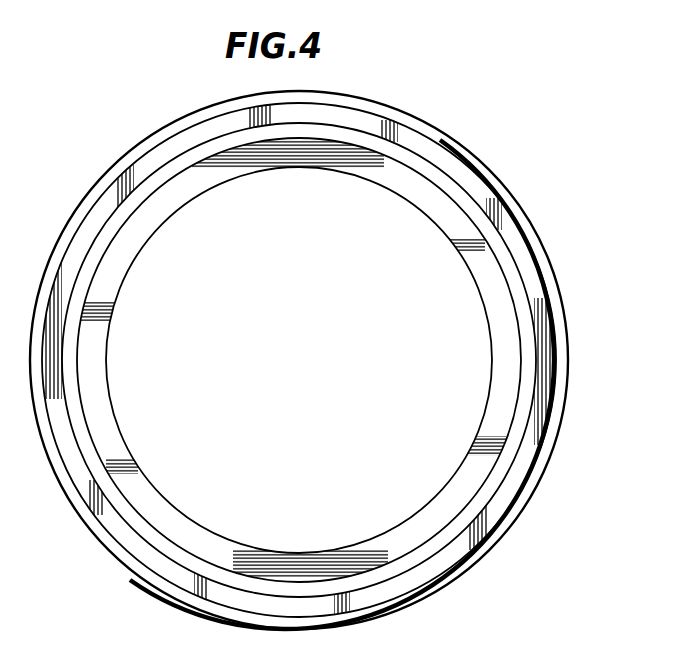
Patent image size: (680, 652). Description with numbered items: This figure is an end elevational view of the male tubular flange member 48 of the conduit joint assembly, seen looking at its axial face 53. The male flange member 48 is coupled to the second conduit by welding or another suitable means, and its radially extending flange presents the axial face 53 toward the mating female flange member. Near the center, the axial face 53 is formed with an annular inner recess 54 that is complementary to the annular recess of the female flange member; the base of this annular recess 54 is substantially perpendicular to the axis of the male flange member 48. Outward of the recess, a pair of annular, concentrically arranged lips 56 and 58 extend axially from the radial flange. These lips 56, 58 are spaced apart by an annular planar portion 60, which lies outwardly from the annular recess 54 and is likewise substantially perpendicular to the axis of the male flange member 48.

The male tubular flange member 48 is at (476, 301).
The axial face 53 is at (541, 350).
The annular inner recess 54 is at (448, 223).
The lip 56 is at (467, 203).
The lip 58 is at (533, 238).
The annular planar portion 60 is at (533, 300).